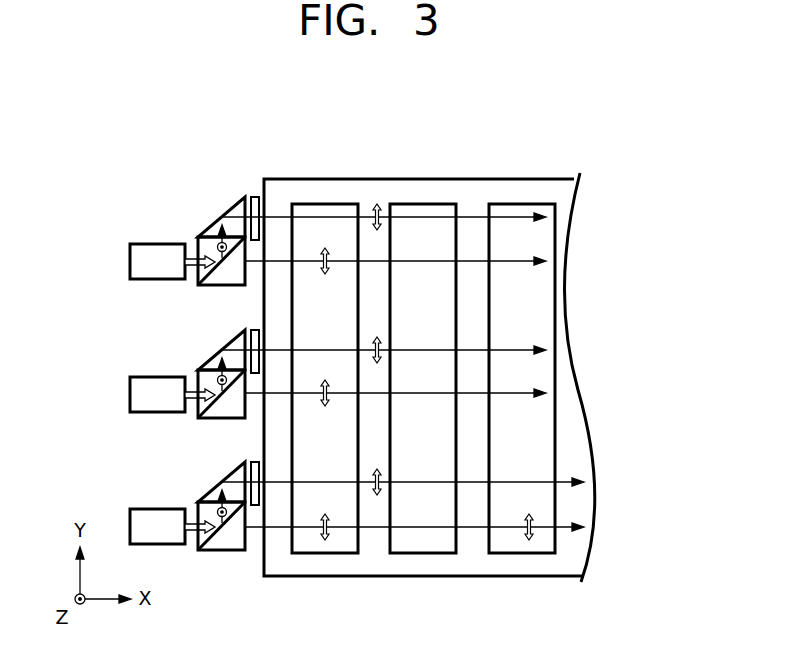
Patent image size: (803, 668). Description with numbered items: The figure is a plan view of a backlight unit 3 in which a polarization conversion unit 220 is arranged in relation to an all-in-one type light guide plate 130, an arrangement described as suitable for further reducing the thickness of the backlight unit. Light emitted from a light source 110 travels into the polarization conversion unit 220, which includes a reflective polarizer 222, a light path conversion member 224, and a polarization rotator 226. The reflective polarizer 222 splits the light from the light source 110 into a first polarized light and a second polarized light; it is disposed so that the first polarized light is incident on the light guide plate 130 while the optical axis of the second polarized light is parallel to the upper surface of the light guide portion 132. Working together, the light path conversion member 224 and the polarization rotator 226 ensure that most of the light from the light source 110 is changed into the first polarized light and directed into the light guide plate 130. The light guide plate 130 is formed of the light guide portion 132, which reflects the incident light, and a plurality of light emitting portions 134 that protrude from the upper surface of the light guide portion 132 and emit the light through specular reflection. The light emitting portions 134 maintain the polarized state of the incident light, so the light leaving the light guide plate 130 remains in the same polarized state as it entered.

The backlight unit 3 is at (624, 138).
The light source 110 is at (130, 262).
The light guide plate 130 is at (530, 124).
The light guide portion 132 is at (461, 195).
The light emitting portions 134 is at (522, 205).
The polarization conversion unit 220 is at (198, 290).
The reflective polarizer 222 is at (198, 239).
The light path conversion member 224 is at (224, 218).
The polarization rotator 226 is at (253, 196).